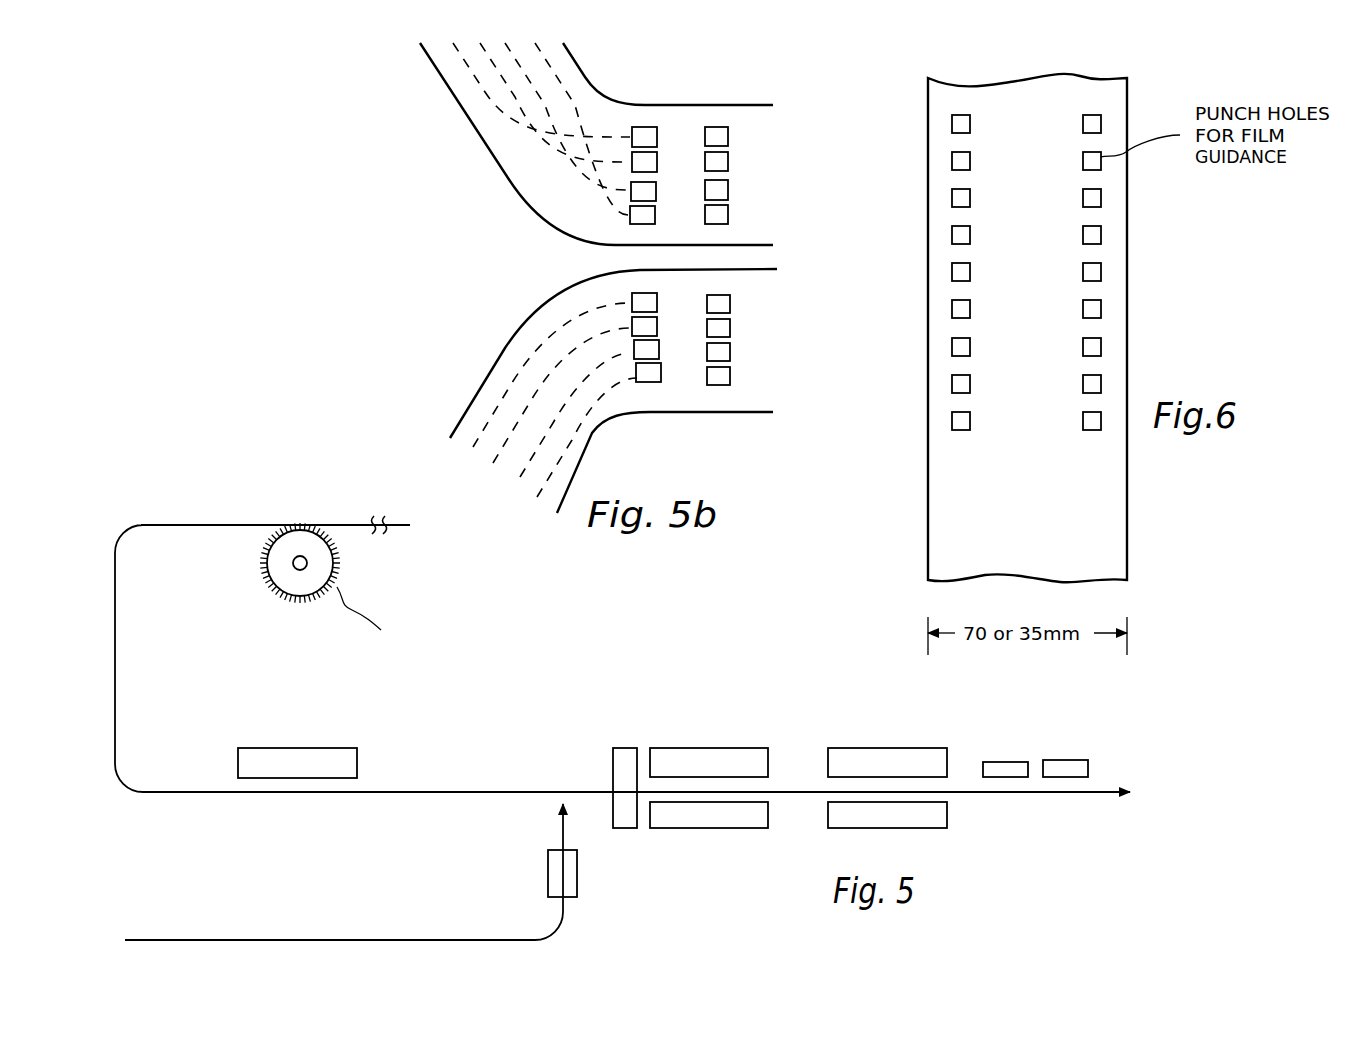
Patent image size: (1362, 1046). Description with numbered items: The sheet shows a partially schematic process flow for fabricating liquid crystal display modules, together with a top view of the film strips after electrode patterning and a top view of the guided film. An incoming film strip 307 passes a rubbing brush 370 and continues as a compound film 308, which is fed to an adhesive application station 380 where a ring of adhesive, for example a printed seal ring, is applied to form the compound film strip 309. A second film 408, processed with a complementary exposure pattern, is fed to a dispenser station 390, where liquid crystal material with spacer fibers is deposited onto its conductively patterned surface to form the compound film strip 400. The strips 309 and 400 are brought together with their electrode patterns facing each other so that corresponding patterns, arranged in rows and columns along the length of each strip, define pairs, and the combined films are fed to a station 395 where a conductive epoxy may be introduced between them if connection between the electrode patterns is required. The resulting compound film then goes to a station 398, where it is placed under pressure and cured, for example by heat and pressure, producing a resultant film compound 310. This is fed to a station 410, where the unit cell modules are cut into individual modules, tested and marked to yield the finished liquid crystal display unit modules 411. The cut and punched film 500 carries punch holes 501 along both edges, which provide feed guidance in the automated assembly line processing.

In FIG. 5, the film strip (incoming, with break marks) 307 is at (355, 525).
In FIG. 5, the compound film 308 is at (222, 525).
In FIG. 5b, the compound film strip 309 is at (750, 106).
In FIG. 5, the compound film strip 309 is at (456, 792).
In FIG. 5, the resultant film compound 310 is at (797, 792).
In FIG. 5, the rubbing brush 370 is at (262, 578).
In FIG. 5, the adhesive application station 380 is at (238, 760).
In FIG. 5, the dispenser station 390 is at (577, 880).
In FIG. 5, the station 395 is at (613, 755).
In FIG. 5, the station 398 is at (693, 706).
In FIG. 5b, the compound film strip 400 is at (762, 410).
In FIG. 5, the compound film strip 400 is at (563, 826).
In FIG. 5, the film 408 is at (467, 940).
In FIG. 5, the station 410 is at (860, 731).
In FIG. 5, the liquid crystal display unit modules 411 is at (1050, 760).
In FIG. 6, the cut and punched film 500 is at (1127, 340).
In FIG. 6, the punch holes 501 is at (1101, 122).